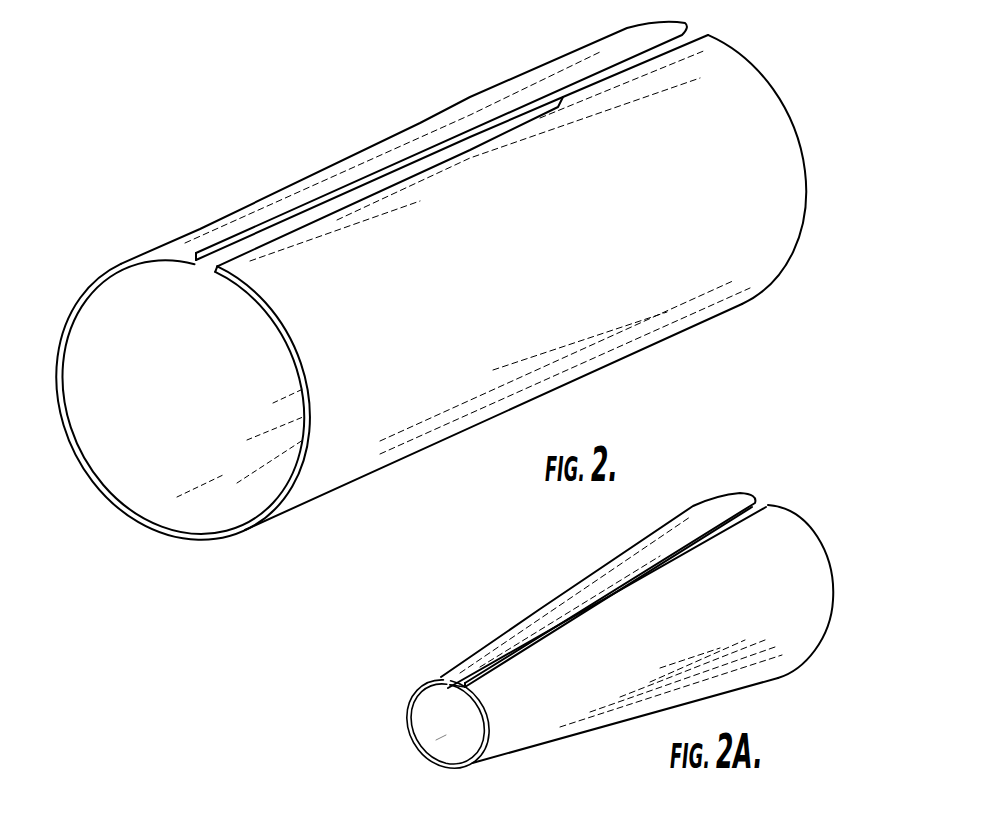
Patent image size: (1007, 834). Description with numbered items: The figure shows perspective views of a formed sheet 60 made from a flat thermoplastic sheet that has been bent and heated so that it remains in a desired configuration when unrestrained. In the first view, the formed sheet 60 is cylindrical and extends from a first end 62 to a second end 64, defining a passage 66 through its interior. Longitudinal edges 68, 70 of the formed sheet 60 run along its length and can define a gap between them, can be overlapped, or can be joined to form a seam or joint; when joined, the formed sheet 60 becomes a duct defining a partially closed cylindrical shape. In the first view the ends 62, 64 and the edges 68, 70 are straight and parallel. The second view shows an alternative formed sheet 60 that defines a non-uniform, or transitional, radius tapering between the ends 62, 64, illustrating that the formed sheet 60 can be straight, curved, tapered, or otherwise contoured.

In FIG. 2, the formed sheet 60 is at (200, 115).
In FIG. 2A, the formed sheet 60 is at (437, 595).
In FIG. 2, the first end 62 is at (72, 304).
In FIG. 2A, the first end 62 is at (408, 706).
In FIG. 2, the second end 64 is at (775, 89).
In FIG. 2A, the second end 64 is at (741, 496).
In FIG. 2, the passage 66 is at (148, 422).
In FIG. 2A, the passage 66 is at (452, 730).
In FIG. 2, the longitudinal edge 68 is at (295, 212).
In FIG. 2A, the longitudinal edge 68 is at (579, 614).
In FIG. 2, the longitudinal edge 70 is at (377, 195).
In FIG. 2A, the longitudinal edge 70 is at (768, 505).